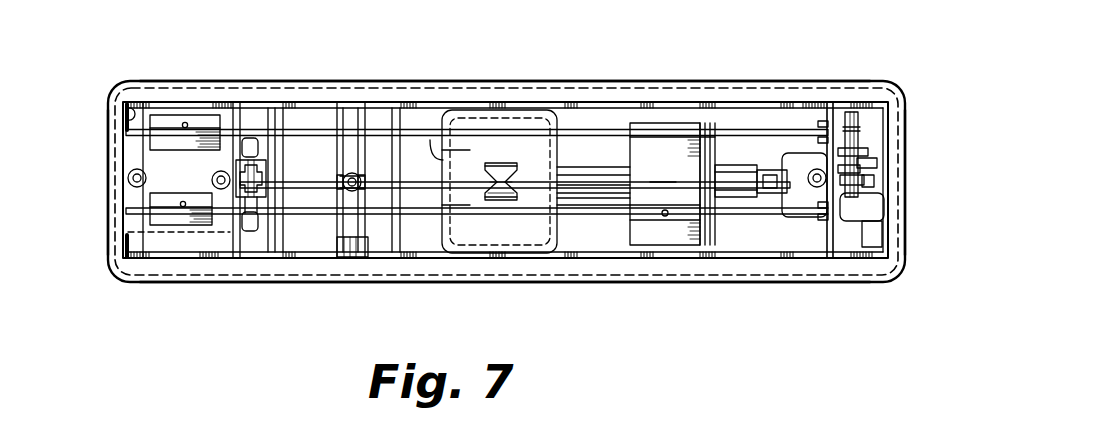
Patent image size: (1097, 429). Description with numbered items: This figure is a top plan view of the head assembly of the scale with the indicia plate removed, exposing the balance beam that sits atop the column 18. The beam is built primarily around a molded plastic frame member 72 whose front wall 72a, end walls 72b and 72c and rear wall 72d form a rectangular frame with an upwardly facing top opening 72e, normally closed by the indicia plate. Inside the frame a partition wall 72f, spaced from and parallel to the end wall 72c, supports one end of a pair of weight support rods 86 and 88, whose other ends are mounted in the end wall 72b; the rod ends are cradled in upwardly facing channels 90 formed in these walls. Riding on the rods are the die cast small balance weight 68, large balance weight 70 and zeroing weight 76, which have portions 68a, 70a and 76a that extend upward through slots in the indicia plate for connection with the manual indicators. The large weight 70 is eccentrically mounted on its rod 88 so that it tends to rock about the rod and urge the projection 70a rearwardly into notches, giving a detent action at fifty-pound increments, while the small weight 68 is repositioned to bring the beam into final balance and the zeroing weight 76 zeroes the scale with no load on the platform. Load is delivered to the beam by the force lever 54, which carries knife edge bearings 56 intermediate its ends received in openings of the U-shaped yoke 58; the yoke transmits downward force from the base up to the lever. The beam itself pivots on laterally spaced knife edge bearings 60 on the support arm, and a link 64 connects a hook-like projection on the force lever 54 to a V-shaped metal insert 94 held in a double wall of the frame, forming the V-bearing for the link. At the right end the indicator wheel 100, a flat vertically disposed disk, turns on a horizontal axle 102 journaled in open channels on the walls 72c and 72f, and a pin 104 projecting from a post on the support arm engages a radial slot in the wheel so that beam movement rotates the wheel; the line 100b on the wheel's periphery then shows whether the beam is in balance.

The column 18 is at (460, 157).
The force lever 54 is at (396, 180).
The knife edge bearings 56 is at (523, 202).
The U-shaped yoke 58 is at (507, 163).
The knife edge bearings 60 is at (345, 125).
The link 64 is at (262, 172).
The small balance weight 68 is at (162, 126).
The portion of small balance weight 68a is at (185, 122).
The large balance weight 70 is at (672, 184).
The projection of large balance weight 70a is at (667, 217).
The frame member 72 is at (852, 282).
The front wall 72a is at (612, 283).
The end wall 72b is at (128, 200).
The end wall 72c is at (906, 215).
The rear wall 72d is at (588, 80).
The top opening 72e is at (612, 104).
The partition wall 72f is at (805, 110).
The zeroing weight 76 is at (162, 203).
The portion of zeroing weight 76a is at (186, 212).
The weight support rod 86 is at (430, 140).
The weight support rod 88 is at (322, 216).
The channels 90 is at (135, 112).
The V-shaped metal insert 94 is at (268, 197).
The indicator wheel 100 is at (848, 122).
The line 100b is at (858, 140).
The axle 102 is at (862, 150).
The pin 104 is at (845, 192).